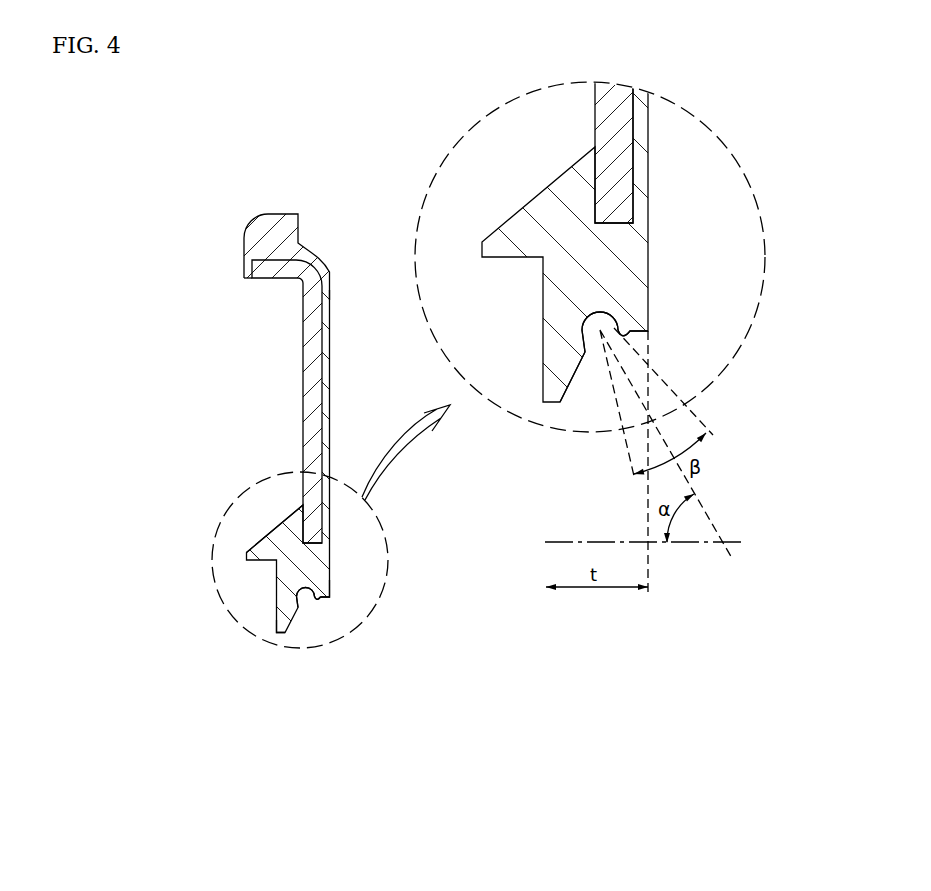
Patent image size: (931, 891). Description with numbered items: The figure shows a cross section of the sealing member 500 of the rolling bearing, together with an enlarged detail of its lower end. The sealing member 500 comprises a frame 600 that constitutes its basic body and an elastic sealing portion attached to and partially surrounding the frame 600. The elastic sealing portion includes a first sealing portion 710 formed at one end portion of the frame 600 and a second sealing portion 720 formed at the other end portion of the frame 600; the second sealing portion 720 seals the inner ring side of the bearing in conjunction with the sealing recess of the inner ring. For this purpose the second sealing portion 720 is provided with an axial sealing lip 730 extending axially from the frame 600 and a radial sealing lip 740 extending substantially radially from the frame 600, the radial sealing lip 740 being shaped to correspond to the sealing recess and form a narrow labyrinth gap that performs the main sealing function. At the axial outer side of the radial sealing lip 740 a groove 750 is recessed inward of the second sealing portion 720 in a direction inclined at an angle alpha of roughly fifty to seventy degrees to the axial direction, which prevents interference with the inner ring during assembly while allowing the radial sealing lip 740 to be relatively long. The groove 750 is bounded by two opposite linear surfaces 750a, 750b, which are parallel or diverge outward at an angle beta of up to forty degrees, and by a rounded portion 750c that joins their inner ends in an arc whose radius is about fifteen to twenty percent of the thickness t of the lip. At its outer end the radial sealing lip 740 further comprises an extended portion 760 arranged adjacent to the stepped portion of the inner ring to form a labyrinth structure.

The sealing member 500 is at (365, 113).
The frame 600 is at (318, 350).
The first sealing portion 710 is at (282, 218).
The second sealing portion 720 is at (365, 547).
The axial sealing lip 730 is at (270, 527).
The radial sealing lip 740 is at (287, 637).
The groove 750 is at (303, 594).
The linear surface 750a is at (607, 340).
The linear surface 750b is at (622, 333).
The rounded portion 750c is at (582, 333).
The extended portion 760 is at (325, 588).